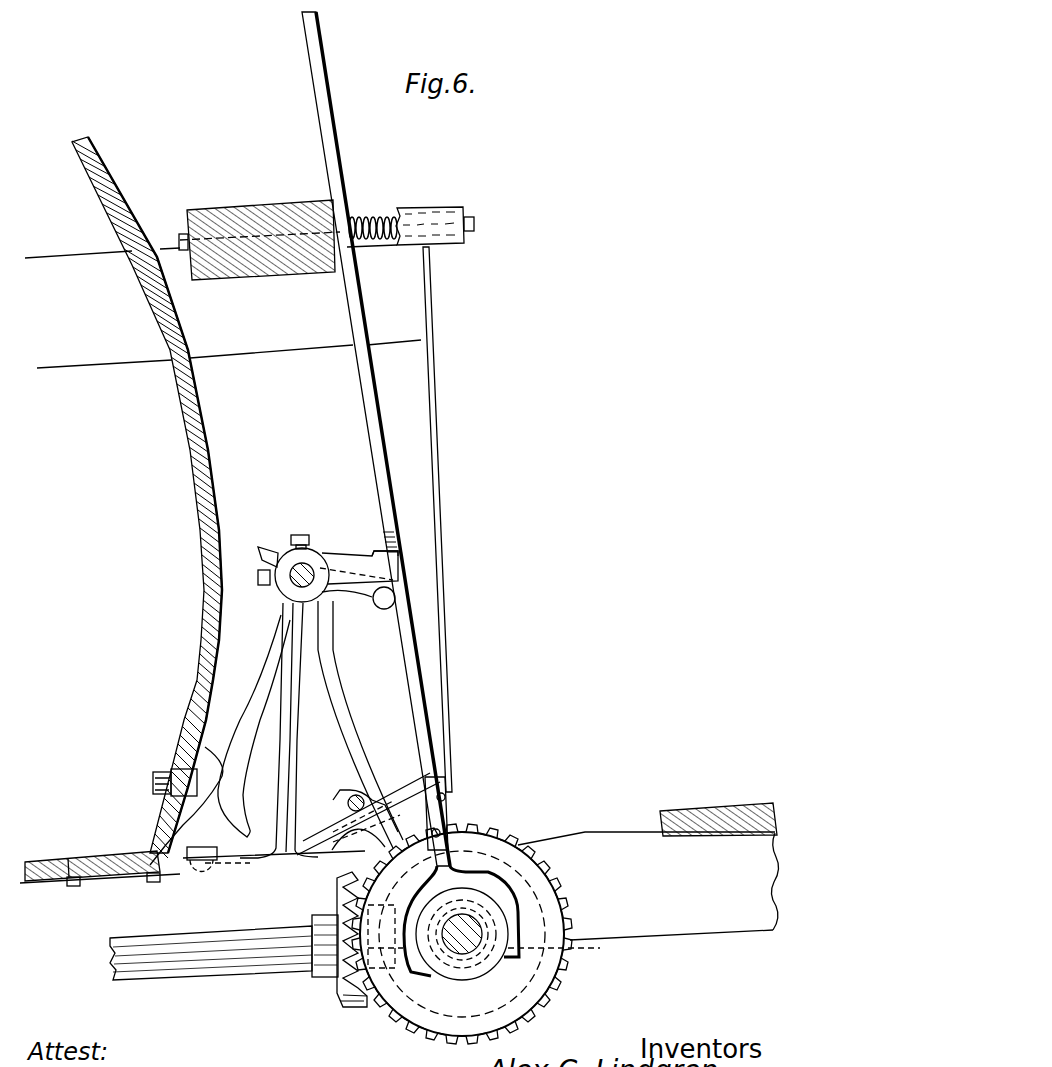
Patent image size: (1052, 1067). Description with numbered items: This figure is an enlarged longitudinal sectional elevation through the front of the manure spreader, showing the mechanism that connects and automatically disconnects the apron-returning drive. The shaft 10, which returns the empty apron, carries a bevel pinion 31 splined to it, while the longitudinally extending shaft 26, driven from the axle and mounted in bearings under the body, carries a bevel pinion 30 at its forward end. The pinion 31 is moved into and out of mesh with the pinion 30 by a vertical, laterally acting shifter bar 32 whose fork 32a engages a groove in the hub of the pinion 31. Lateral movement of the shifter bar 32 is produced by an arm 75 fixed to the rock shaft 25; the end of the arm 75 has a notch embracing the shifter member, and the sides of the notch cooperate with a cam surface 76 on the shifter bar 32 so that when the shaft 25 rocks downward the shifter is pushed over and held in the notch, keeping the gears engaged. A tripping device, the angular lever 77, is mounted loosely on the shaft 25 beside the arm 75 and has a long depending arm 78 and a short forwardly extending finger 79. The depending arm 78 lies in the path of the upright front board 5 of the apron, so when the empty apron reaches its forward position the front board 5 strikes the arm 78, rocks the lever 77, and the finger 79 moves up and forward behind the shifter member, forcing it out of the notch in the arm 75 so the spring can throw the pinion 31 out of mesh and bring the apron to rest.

The front board 5 is at (205, 560).
The shaft 10 is at (460, 944).
The rock shaft 25 is at (310, 570).
The longitudinally extending shaft 26 is at (229, 946).
The bevel pinion 30 is at (340, 988).
The bevel pinion 31 is at (562, 990).
The shifter bar 32 is at (372, 417).
The fork 32a is at (510, 912).
The arm 75 is at (367, 560).
The cam surface 76 is at (397, 552).
The angular lever 77 is at (277, 644).
The depending arm 78 is at (264, 702).
The finger 79 is at (367, 593).